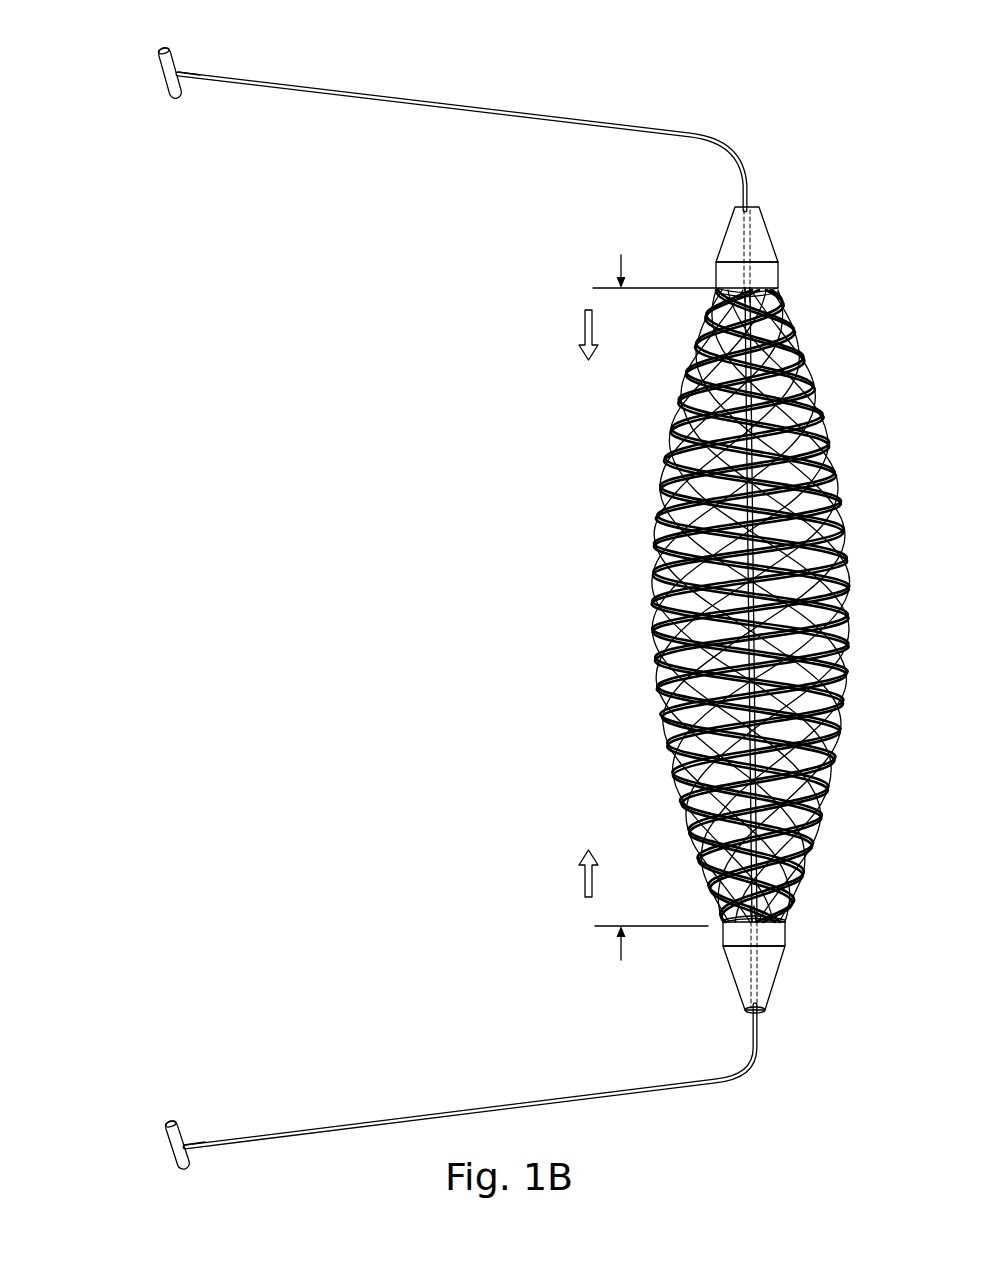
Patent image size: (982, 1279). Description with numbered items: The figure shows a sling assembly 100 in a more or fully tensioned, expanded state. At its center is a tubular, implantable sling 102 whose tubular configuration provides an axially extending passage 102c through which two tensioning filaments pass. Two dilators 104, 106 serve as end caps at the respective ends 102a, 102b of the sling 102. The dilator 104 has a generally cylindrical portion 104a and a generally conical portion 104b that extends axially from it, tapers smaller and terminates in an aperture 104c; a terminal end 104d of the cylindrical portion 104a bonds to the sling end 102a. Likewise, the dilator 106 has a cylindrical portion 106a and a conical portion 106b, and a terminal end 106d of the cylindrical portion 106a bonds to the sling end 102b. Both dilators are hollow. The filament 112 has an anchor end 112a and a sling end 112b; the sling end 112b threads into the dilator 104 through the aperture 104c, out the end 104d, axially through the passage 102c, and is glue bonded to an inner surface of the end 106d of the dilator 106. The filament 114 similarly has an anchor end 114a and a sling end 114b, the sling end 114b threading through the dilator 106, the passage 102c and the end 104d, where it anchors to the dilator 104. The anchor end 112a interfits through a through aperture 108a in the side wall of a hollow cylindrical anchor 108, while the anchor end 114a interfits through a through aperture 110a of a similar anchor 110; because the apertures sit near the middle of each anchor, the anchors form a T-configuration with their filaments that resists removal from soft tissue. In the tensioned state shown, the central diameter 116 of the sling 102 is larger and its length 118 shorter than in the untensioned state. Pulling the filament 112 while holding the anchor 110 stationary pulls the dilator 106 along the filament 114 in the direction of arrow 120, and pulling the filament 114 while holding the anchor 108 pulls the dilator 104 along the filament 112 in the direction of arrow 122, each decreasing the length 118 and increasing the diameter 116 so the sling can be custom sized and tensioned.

The sling assembly 100 is at (500, 575).
The sling 102 is at (726, 604).
The end of the sling 102a is at (802, 928).
The end of the sling 102b is at (795, 291).
The axially extending passage 102c is at (685, 686).
The dilator 104 is at (751, 951).
The cylindrical portion 104a is at (782, 945).
The conical portion 104b is at (735, 985).
The aperture 104c is at (758, 1012).
The terminal end 104d is at (790, 906).
The dilator 106 is at (750, 258).
The cylindrical portion 106a is at (772, 272).
The conical portion 106b is at (756, 228).
The terminal end 106d is at (778, 300).
The anchor 108 is at (136, 1121).
The through aperture 108a is at (170, 1120).
The anchor 110 is at (120, 56).
The through aperture 110a is at (171, 33).
The filament 112 is at (436, 738).
The anchor end 112a is at (180, 1153).
The sling end 112b is at (718, 297).
The filament 114 is at (476, 497).
The anchor end 114a is at (170, 84).
The sling end 114b is at (720, 908).
The diameter 116 is at (668, 418).
The length 118 is at (613, 266).
The arrow 120 is at (578, 326).
The arrow 122 is at (578, 866).